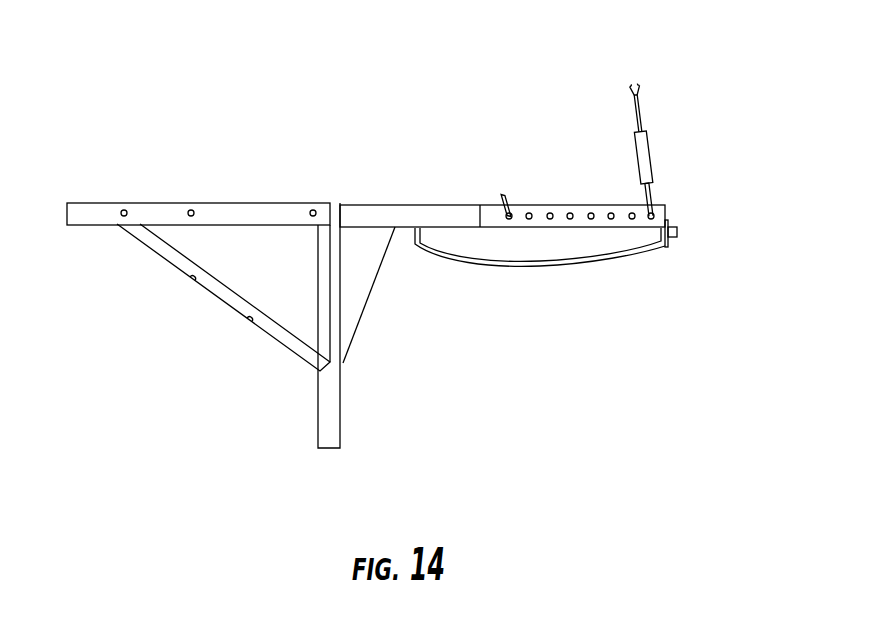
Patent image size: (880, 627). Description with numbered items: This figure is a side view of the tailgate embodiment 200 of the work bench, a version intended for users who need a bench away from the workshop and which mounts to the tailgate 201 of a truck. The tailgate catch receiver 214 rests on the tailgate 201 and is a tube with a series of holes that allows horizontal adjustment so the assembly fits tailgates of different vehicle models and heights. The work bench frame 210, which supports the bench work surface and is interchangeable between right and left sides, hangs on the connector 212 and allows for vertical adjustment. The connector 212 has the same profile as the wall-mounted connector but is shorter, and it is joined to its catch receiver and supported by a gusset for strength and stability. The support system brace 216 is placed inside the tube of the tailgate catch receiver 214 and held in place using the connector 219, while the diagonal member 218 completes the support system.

The tailgate embodiment 200 is at (165, 110).
The tailgate 201 is at (390, 194).
The work bench frame 210 is at (146, 280).
The connector 212 is at (342, 408).
The tailgate catch receiver 214 is at (592, 228).
The support system brace 216 is at (320, 316).
The diagonal brace 218 is at (238, 319).
The connector 219 is at (680, 155).